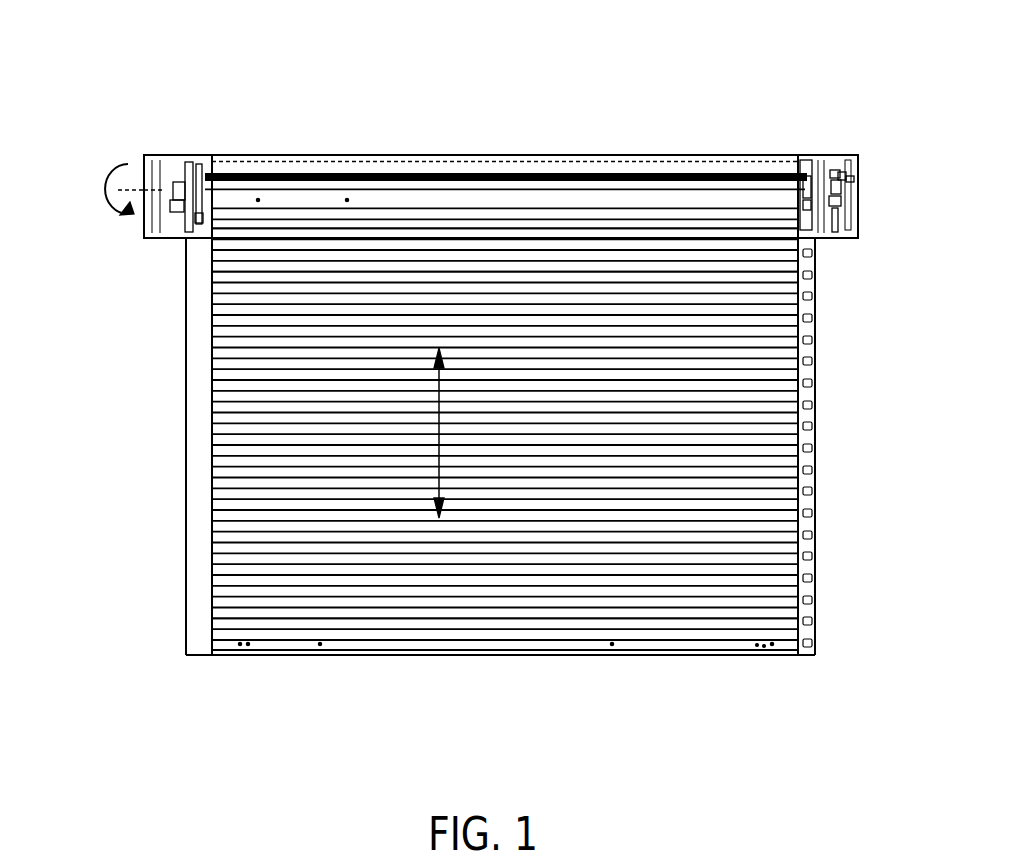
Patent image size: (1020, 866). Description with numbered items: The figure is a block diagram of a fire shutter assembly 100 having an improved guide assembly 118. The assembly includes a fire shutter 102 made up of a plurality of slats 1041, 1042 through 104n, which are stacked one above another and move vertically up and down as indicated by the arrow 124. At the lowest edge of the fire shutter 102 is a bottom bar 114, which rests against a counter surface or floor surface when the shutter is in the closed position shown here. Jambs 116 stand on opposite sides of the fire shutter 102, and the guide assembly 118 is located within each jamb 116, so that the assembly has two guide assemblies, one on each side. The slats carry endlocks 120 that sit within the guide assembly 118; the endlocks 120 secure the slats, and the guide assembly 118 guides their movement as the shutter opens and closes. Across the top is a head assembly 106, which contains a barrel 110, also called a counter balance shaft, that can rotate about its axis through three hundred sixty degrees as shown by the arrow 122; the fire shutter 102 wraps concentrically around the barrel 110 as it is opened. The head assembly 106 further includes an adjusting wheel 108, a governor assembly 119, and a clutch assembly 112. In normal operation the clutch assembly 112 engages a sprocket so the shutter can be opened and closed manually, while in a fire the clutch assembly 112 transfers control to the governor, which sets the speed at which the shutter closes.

The fire shutter assembly 100 is at (112, 88).
The fire shutter 102 is at (262, 376).
The slat 1041 is at (212, 250).
The slat 1042 is at (212, 270).
The slat 104n is at (212, 632).
The head assembly 106 is at (860, 202).
The adjusting wheel 108 is at (178, 155).
The barrel 110 is at (505, 178).
The clutch assembly 112 is at (836, 180).
The bottom bar 114 is at (780, 652).
The jamb 116 is at (196, 490).
The guide assembly 118 is at (815, 343).
The governor assembly 119 is at (803, 178).
The endlock 120 is at (812, 375).
The arrow 122 is at (100, 200).
The arrow 124 is at (441, 418).